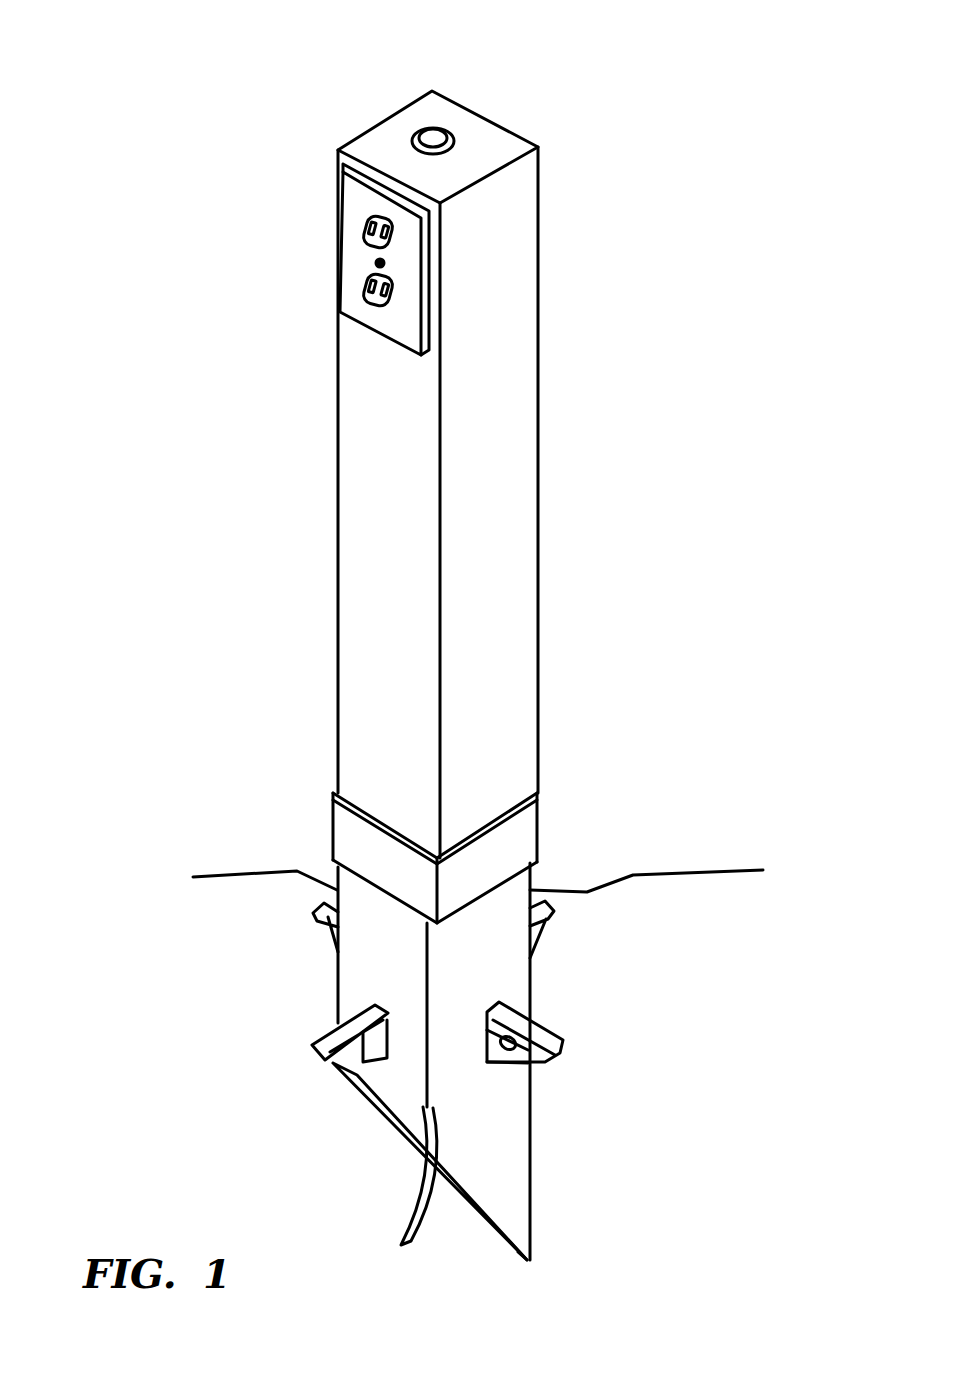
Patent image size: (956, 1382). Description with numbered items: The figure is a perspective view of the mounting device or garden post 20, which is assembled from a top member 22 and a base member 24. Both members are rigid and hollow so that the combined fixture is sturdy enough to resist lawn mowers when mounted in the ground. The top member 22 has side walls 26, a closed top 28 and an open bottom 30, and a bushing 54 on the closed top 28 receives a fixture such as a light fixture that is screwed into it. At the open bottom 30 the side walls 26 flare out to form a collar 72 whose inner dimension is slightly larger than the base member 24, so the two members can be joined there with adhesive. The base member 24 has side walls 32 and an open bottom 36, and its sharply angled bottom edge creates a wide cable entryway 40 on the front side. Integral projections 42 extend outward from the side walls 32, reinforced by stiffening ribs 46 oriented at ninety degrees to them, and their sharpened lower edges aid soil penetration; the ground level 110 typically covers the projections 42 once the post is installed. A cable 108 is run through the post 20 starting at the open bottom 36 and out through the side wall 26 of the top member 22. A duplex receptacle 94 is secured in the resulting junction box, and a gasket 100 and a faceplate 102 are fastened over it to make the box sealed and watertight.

The mounting device 20 is at (233, 591).
The top member 22 is at (436, 429).
The base member 24 is at (472, 1088).
The side walls 26 is at (401, 537).
The closed top 28 is at (400, 130).
The open bottom 30 is at (482, 852).
The side walls 32 is at (396, 971).
The open bottom 36 is at (514, 1260).
The cable entryway 40 is at (400, 1120).
The integral projections 42 is at (333, 1063).
The stiffening ribs 46 is at (333, 1027).
The bushing 54 is at (452, 128).
The collar 72 is at (506, 873).
The duplex receptacle 94 is at (362, 286).
The gasket 100 is at (380, 259).
The faceplate 102 is at (350, 253).
The cable 108 is at (410, 1233).
The ground level 110 is at (710, 870).